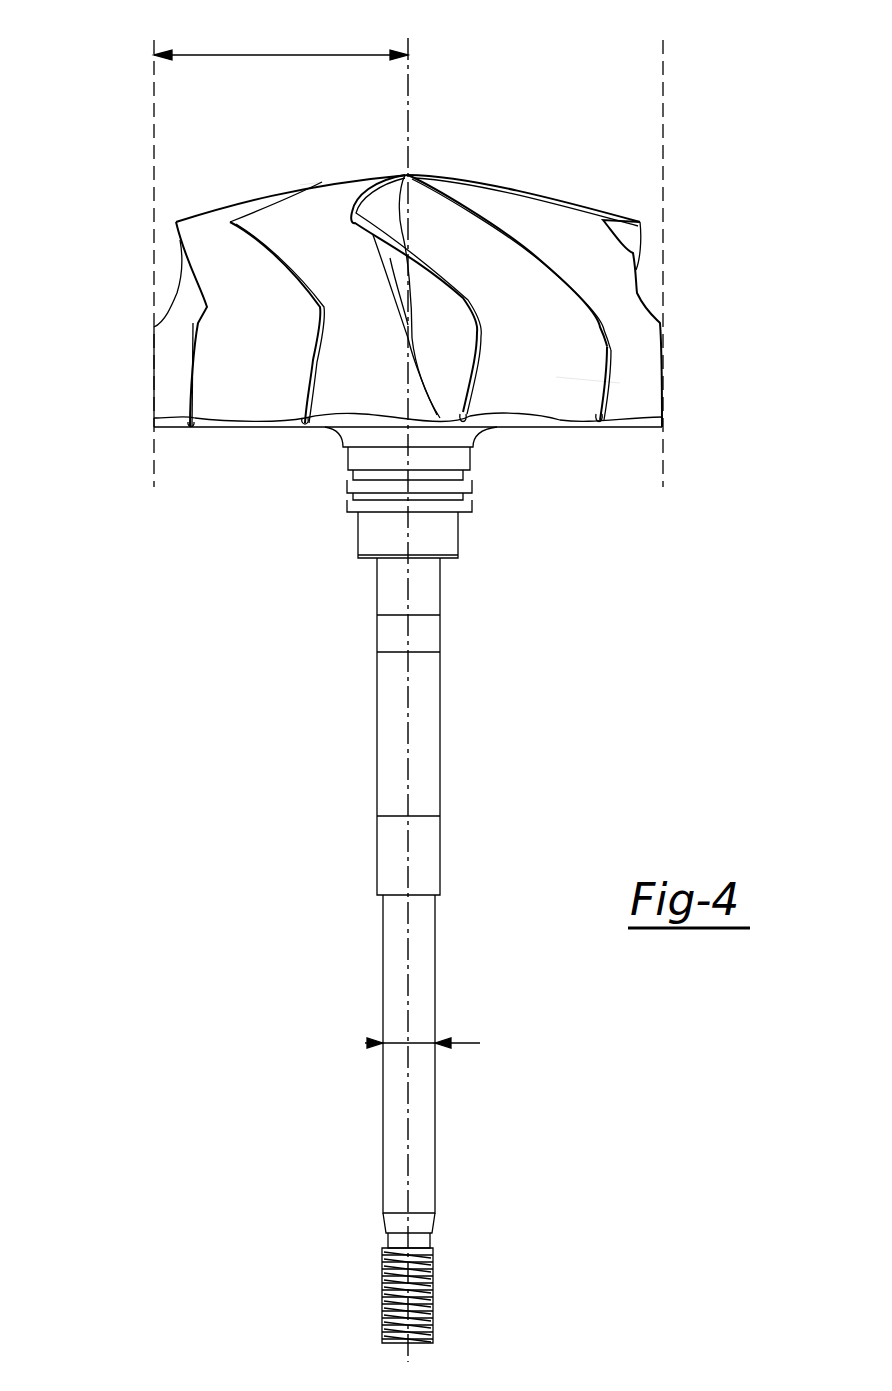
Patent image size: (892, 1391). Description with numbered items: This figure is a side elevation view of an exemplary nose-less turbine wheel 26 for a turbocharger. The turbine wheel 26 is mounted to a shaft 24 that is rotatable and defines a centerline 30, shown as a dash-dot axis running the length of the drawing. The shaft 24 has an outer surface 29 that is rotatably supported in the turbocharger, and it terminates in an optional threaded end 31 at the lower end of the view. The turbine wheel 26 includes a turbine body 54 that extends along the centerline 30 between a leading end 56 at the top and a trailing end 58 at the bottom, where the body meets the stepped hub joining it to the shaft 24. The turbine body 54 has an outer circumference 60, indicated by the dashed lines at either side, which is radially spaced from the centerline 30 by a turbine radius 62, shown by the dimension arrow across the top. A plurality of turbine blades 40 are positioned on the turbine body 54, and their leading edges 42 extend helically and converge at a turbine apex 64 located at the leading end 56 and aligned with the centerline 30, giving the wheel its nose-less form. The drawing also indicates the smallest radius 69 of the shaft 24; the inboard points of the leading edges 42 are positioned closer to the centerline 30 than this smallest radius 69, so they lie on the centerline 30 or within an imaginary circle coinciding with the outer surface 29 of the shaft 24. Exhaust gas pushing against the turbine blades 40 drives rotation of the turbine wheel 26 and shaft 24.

The shaft 24 is at (425, 730).
The turbine wheel 26 is at (722, 242).
The outer surface 29 is at (437, 960).
The centerline 30 is at (410, 83).
The threaded end 31 is at (448, 1275).
The turbine blades 40 is at (620, 383).
The leading edges 42 is at (245, 200).
The turbine body 54 is at (397, 383).
The leading end 56 is at (321, 175).
The trailing end 58 is at (217, 435).
The outer circumference 60 is at (153, 105).
The turbine radius 62 is at (255, 55).
The turbine apex 64 is at (406, 174).
The smallest radius 69 is at (418, 1046).